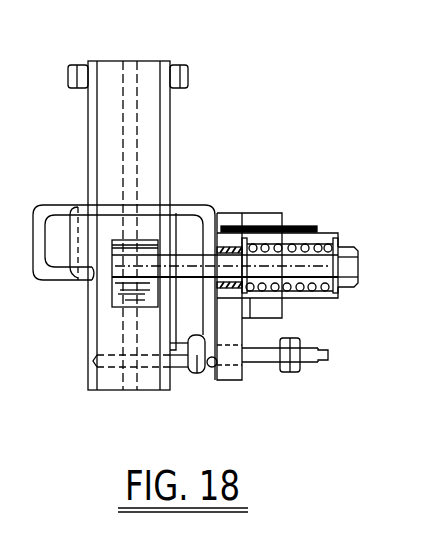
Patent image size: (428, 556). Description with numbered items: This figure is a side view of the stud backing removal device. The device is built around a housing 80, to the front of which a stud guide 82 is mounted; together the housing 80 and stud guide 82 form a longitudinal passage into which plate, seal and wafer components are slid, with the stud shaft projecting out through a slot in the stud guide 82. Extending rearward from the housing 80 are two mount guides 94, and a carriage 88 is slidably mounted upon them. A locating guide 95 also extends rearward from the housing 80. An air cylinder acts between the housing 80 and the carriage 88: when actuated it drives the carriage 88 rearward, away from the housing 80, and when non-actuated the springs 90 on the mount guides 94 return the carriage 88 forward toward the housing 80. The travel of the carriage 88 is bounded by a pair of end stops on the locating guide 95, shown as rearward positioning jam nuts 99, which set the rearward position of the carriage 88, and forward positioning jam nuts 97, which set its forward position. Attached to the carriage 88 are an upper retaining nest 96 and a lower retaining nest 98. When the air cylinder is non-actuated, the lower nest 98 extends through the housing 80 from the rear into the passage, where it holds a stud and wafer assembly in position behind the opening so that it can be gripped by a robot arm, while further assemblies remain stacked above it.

The housing 80 is at (140, 58).
The stud guide 82 is at (86, 100).
The carriage 88 is at (316, 232).
The springs 90 is at (325, 294).
The mount guides 94 is at (184, 252).
The locating guide 95 is at (266, 382).
The upper retaining nest 96 is at (40, 203).
The forward positioning jam nuts 97 is at (208, 382).
The lower retaining nest 98 is at (187, 370).
The rearward positioning jam nuts 99 is at (290, 373).